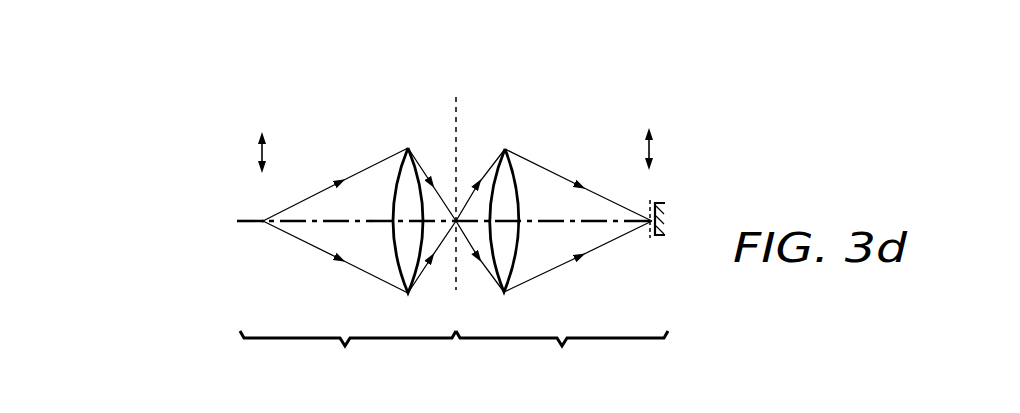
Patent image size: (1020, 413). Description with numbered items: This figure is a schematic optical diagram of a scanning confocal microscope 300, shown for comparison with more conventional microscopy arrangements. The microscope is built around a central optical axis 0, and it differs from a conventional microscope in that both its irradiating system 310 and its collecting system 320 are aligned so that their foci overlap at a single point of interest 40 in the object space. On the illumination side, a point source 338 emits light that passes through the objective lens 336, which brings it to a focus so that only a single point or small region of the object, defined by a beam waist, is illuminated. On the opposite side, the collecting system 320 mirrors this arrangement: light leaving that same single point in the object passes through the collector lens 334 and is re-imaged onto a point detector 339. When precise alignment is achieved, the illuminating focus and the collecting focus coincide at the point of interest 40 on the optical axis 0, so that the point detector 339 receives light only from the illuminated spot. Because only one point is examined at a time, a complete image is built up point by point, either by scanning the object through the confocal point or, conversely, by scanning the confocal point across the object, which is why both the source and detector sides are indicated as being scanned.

The scanning confocal microscope 300 is at (379, 106).
The irradiating system 310 is at (348, 267).
The collecting system 320 is at (562, 268).
The objective lens 336 is at (401, 268).
The collector lens 334 is at (514, 272).
The point source 338 is at (263, 220).
The point detector 339 is at (666, 210).
The optical axis 0 is at (371, 218).
The point of interest 40 is at (457, 220).